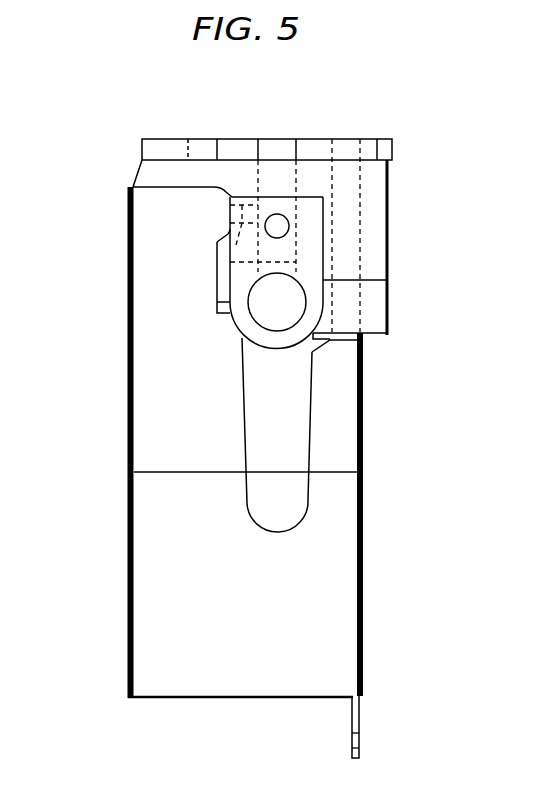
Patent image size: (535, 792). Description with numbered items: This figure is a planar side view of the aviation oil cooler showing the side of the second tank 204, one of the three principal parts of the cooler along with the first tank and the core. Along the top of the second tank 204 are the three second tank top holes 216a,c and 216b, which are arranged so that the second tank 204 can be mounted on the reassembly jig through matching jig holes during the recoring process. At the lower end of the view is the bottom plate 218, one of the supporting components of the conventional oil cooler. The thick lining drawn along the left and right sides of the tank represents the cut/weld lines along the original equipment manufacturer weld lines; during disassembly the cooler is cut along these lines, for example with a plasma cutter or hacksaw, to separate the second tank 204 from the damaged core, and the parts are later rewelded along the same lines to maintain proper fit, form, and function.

The second tank 204 is at (444, 101).
The second tank top holes 216a,c is at (200, 147).
The second tank top hole 216b is at (345, 150).
The bottom plate 218 is at (353, 728).